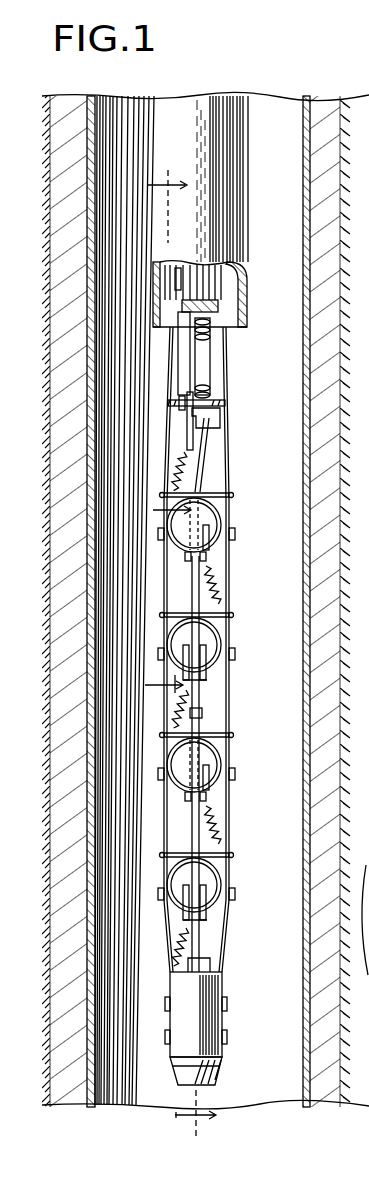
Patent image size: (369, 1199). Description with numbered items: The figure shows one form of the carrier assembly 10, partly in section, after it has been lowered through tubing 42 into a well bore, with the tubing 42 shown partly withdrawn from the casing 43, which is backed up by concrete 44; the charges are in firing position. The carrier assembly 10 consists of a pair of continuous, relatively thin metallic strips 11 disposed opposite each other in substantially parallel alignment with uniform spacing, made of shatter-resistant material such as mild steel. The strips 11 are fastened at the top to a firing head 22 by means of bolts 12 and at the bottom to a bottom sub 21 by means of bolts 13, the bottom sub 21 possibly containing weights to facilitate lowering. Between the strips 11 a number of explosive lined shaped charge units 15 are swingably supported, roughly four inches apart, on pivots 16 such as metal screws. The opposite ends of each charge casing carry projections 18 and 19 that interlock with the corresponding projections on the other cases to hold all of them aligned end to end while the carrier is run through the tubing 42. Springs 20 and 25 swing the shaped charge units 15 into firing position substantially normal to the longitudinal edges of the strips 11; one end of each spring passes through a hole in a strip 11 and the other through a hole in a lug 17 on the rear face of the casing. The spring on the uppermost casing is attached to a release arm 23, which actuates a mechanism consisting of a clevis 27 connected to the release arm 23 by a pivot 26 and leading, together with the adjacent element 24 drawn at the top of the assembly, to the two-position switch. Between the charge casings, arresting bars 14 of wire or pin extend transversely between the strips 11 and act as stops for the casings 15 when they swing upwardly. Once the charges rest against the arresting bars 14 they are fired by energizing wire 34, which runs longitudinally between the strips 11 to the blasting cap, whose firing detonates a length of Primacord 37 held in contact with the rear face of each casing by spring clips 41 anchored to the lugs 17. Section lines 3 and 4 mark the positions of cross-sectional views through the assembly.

The section line 3- 3 is at (162, 335).
The section line 4- 4 is at (180, 902).
The carrier assembly 10 is at (280, 360).
The metallic strips 11 is at (226, 430).
The bolts 12 is at (240, 272).
The bolts 13 is at (222, 1035).
The arresting bars 14 is at (222, 492).
The shaped charge units 15 is at (216, 520).
The pivots 16 is at (235, 546).
The lug 17 is at (207, 560).
The projection 18 is at (209, 540).
The projections 19 is at (207, 656).
The springs 20 is at (212, 580).
The bottom sub 21 is at (203, 1050).
The firing head 22 is at (215, 262).
The release arm 23 is at (188, 440).
The latch plate 24 is at (206, 402).
The spring 25 is at (180, 470).
The pivot 26 is at (183, 405).
The clevis 27 is at (183, 350).
The wire 34 is at (206, 968).
The Primacord 37 is at (205, 462).
The spring clips 41 is at (203, 714).
The tubing 42 is at (170, 100).
The casing 43 is at (305, 108).
The concrete 44 is at (322, 104).